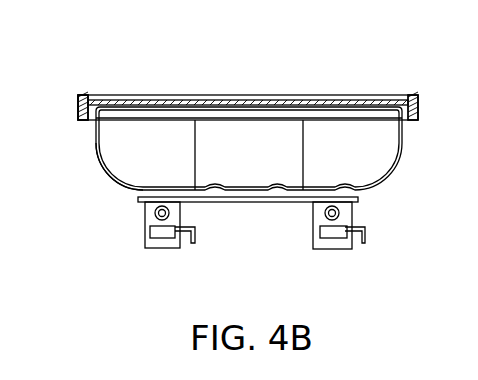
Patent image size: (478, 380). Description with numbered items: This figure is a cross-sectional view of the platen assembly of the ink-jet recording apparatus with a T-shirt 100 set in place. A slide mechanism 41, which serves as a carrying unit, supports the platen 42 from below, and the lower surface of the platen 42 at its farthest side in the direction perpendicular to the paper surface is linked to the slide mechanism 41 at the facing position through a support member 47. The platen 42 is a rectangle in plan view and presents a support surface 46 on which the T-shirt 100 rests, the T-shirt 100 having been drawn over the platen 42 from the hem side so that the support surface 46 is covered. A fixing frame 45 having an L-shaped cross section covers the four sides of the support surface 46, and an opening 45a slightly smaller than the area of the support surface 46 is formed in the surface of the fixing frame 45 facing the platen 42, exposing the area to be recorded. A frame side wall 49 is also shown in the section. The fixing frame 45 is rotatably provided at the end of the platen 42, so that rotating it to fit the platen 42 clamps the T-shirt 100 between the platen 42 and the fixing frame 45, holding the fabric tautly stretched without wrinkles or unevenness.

The T-shirt 100 is at (97, 177).
The slide mechanism 41 is at (146, 216).
The platen 42 is at (340, 121).
The fixing frame 45 is at (410, 94).
The opening 45a is at (106, 99).
The support surface 46 is at (172, 100).
The support member 47 is at (292, 165).
The frame side wall 49 is at (80, 122).